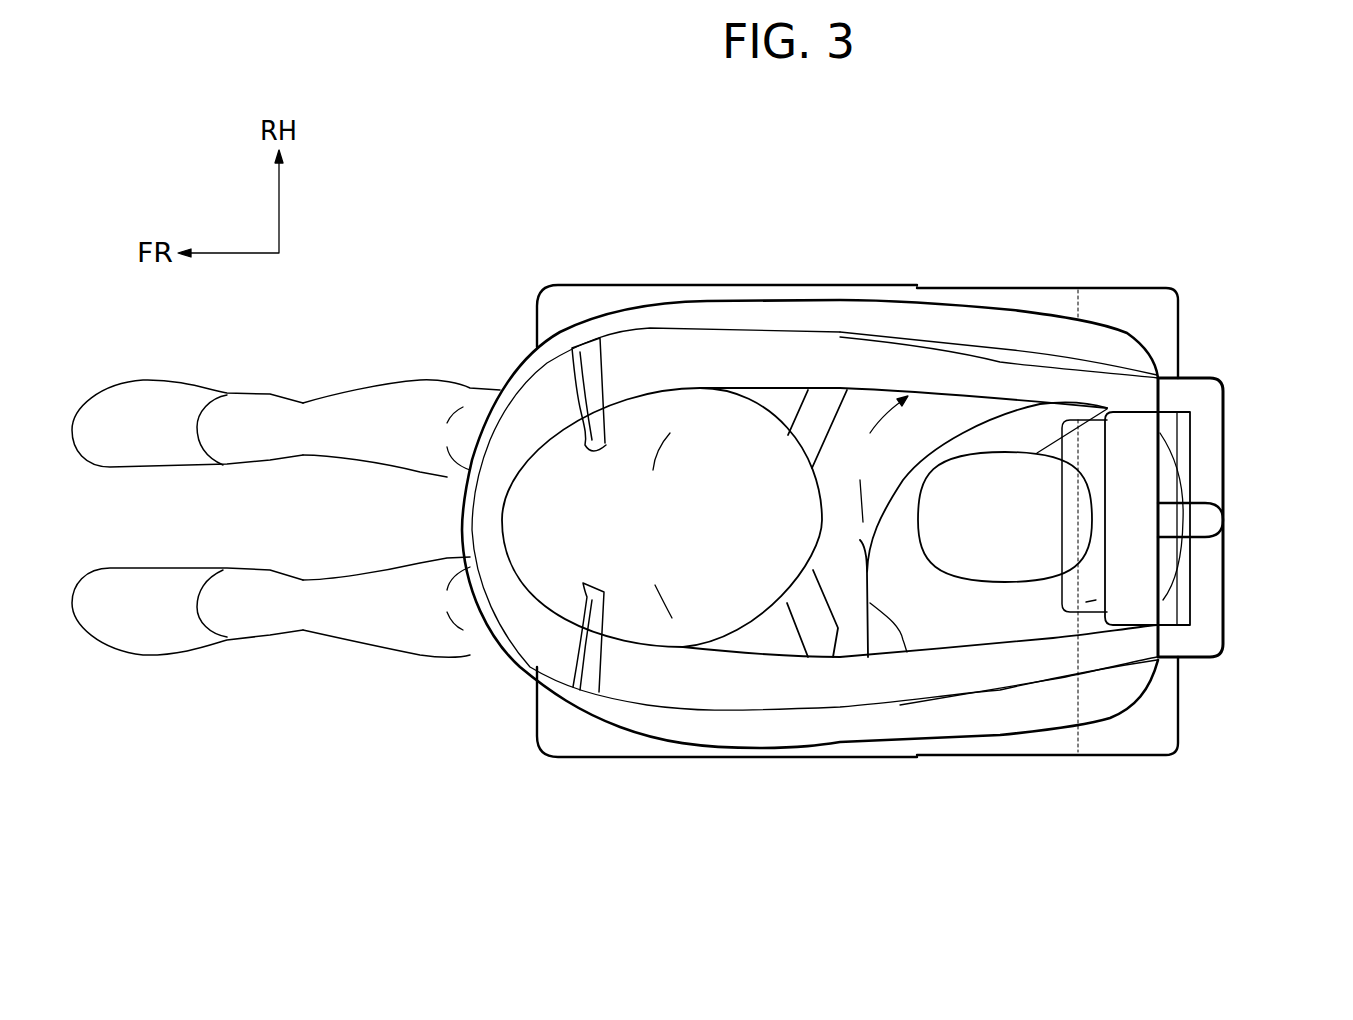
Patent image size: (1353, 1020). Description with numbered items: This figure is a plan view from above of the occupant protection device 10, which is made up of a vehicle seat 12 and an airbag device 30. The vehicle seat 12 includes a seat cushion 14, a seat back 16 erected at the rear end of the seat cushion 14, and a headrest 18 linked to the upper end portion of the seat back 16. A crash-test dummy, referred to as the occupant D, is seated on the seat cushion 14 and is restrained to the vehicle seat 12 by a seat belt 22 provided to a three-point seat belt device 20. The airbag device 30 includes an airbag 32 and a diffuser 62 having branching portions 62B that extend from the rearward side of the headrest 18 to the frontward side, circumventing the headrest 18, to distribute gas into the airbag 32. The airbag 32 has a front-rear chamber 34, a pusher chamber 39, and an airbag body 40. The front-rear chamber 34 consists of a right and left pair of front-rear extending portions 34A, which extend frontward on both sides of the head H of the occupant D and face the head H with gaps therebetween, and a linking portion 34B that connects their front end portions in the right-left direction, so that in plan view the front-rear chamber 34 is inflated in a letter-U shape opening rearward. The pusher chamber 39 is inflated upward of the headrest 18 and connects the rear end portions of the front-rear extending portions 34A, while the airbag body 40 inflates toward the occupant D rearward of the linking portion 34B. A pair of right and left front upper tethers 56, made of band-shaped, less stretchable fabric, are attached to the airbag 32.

The occupant protection device 10 is at (860, 192).
The vehicle seat 12 is at (872, 758).
The seat cushion 14 is at (700, 760).
The seat back 16 is at (1045, 760).
The headrest 18 is at (1172, 563).
The seat belt device 20 is at (859, 430).
The seat belt 22 is at (945, 452).
The airbag device 30 is at (1246, 285).
The airbag 32 is at (472, 352).
The front-rear chamber 34 is at (793, 298).
The front-rear extending portions 34A is at (1016, 310).
The linking portion 34B is at (460, 523).
The pusher chamber 39 is at (1143, 477).
The airbag body 40 is at (717, 408).
The front upper tethers 56 is at (570, 378).
The diffuser 62 is at (1222, 657).
The branching portions 62B is at (1225, 405).
The crash-test dummy (occupant) D is at (415, 660).
The head H is at (1033, 470).